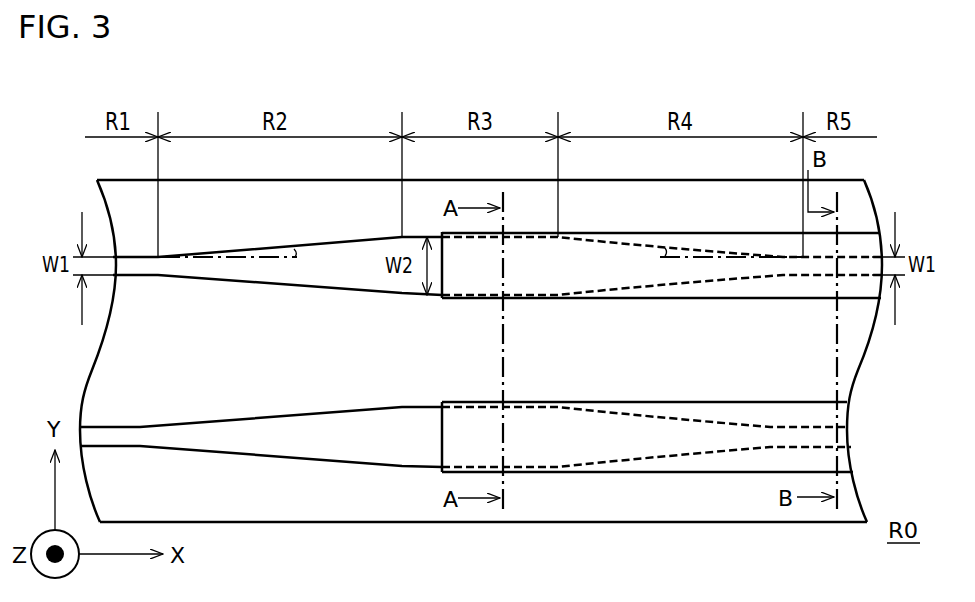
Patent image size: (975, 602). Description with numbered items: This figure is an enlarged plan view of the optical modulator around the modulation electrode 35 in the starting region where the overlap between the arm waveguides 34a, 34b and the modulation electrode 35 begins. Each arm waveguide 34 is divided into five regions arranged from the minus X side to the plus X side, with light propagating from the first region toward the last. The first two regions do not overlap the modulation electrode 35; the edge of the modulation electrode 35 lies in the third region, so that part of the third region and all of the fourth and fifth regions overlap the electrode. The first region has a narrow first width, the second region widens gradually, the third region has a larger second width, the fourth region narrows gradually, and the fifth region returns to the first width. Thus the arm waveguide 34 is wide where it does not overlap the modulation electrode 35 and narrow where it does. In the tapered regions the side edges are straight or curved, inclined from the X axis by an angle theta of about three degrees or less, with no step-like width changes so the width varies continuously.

The arm waveguide 34 is at (481, 352).
The arm waveguide 34a is at (296, 283).
The arm waveguide 34b is at (297, 419).
The modulation electrode 35 is at (739, 299).